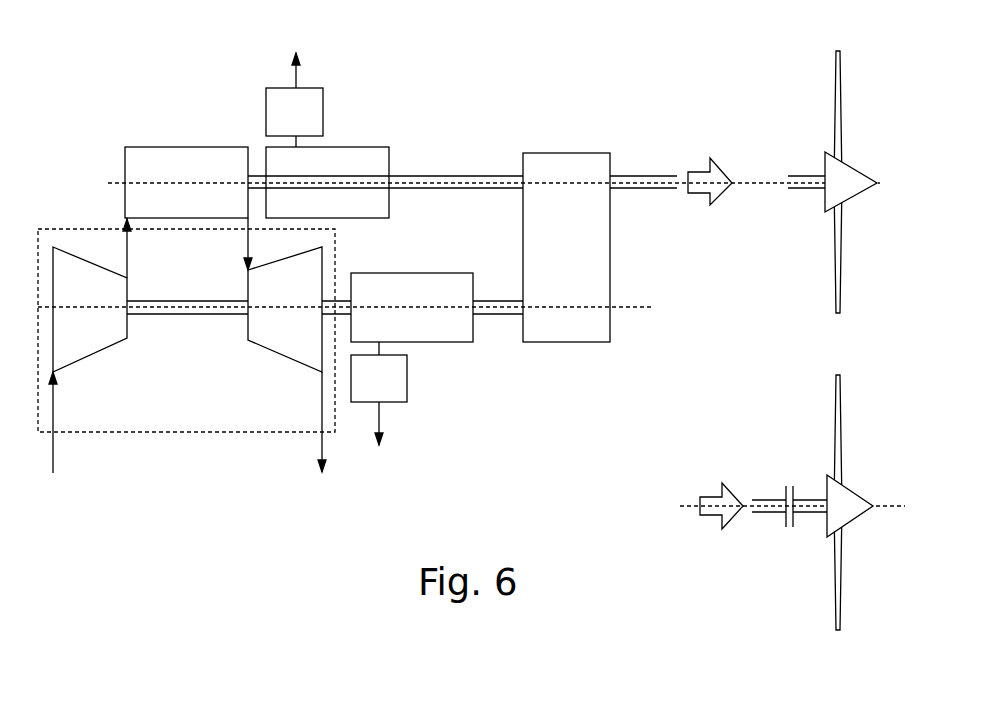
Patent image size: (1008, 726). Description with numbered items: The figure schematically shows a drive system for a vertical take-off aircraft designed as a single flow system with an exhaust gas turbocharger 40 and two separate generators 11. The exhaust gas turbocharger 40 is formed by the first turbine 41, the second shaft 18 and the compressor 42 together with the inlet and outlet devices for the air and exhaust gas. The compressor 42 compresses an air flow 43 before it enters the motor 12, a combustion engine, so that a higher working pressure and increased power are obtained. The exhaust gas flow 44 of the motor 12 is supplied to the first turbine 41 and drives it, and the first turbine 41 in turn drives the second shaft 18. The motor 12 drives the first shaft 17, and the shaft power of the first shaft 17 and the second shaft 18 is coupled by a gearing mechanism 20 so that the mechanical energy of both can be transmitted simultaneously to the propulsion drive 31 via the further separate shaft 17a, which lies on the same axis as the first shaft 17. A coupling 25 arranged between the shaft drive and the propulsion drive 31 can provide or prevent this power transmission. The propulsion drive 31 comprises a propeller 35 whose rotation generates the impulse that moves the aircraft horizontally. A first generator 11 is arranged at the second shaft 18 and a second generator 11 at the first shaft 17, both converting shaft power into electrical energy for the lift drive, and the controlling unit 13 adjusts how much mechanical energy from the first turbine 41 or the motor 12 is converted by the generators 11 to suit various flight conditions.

The generator 11 is at (370, 162).
The motor 12 is at (172, 162).
The controlling unit 13 is at (313, 100).
The first shaft 17 is at (460, 183).
The further separate shaft 17a is at (634, 183).
The second shaft 18 is at (187, 308).
The gearing mechanism 20 is at (593, 236).
The coupling 25 is at (781, 473).
The propulsion drive 31 is at (788, 336).
The propeller 35 is at (838, 243).
The exhaust gas turbocharger 40 is at (280, 355).
The first turbine 41 is at (290, 323).
The compressor 42 is at (85, 277).
The air flow 43 is at (53, 445).
The exhaust gas flow 44 is at (248, 245).